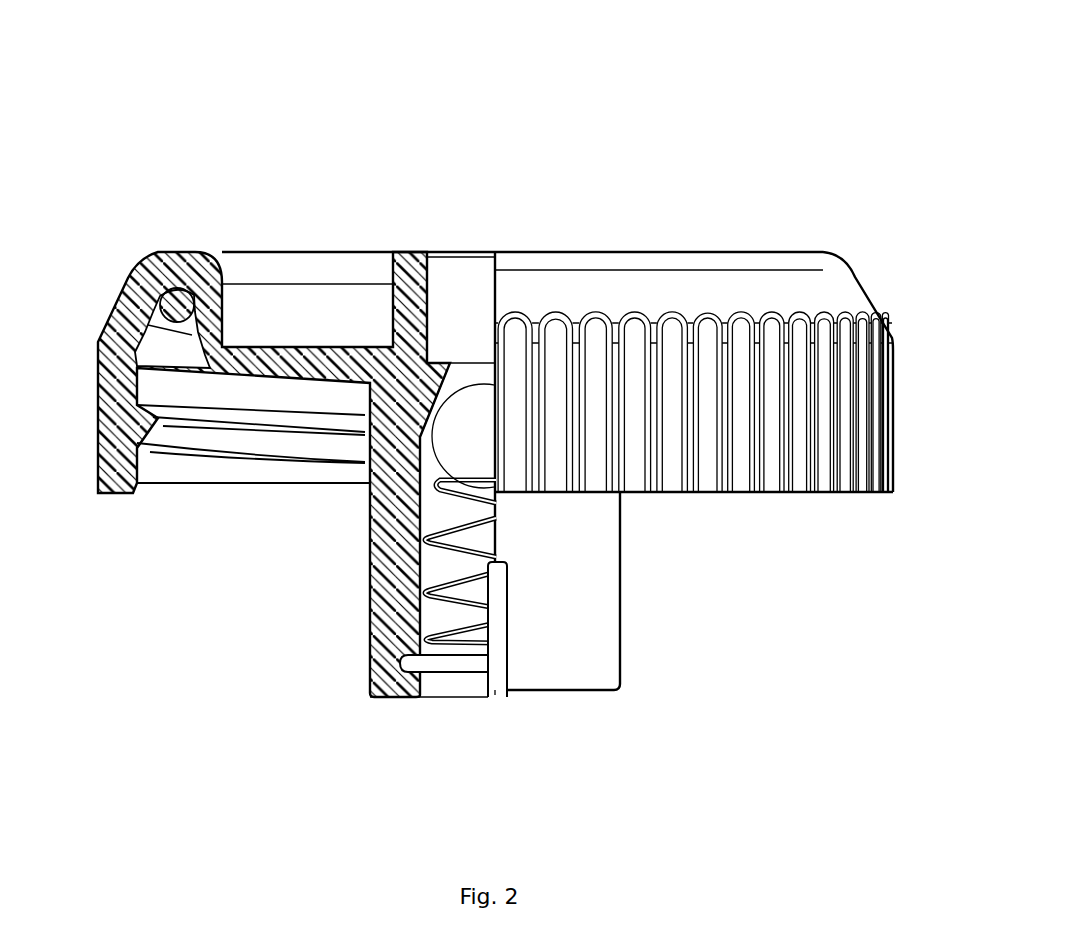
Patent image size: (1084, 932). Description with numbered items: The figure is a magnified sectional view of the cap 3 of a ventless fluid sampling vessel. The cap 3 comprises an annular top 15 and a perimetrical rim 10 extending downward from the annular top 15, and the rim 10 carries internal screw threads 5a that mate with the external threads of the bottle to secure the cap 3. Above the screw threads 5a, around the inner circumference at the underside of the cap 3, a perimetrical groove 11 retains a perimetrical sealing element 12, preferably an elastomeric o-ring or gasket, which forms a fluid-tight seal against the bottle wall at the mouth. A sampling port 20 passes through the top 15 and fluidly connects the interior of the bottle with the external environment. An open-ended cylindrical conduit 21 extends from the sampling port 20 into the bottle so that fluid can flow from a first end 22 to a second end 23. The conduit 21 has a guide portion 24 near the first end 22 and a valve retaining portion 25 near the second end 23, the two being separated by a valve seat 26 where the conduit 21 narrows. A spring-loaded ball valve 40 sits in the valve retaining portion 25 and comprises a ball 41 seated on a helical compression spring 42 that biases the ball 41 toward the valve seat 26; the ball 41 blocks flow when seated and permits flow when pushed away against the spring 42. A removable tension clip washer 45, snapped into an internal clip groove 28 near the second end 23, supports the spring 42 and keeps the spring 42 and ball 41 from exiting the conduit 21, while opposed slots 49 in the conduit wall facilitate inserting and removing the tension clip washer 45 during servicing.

The cap 3 is at (527, 85).
The perimetrical rim 10 is at (98, 336).
The perimetrical groove 11 is at (181, 302).
The perimetrical sealing element 12 is at (152, 255).
The internal screw threads 5a is at (232, 472).
The annular top 15 is at (610, 250).
The sampling port 20 is at (478, 252).
The open-ended cylindrical conduit 21 is at (598, 602).
The first end 22 is at (393, 260).
The second end 23 is at (375, 686).
The guide portion 24 is at (468, 285).
The valve retaining portion 25 is at (435, 564).
The valve seat 26 is at (433, 378).
The internal clip groove 28 is at (402, 657).
The spring-loaded ball valve 40 is at (365, 544).
The ball 41 is at (460, 445).
The spring 42 is at (437, 590).
The removable tension clip washer 45 is at (473, 665).
The opposed slots 49 is at (496, 692).